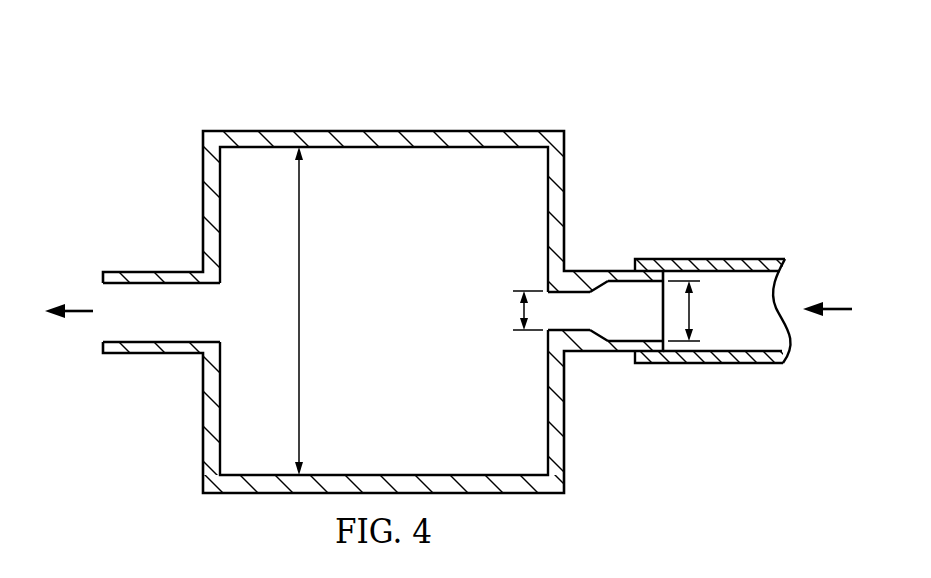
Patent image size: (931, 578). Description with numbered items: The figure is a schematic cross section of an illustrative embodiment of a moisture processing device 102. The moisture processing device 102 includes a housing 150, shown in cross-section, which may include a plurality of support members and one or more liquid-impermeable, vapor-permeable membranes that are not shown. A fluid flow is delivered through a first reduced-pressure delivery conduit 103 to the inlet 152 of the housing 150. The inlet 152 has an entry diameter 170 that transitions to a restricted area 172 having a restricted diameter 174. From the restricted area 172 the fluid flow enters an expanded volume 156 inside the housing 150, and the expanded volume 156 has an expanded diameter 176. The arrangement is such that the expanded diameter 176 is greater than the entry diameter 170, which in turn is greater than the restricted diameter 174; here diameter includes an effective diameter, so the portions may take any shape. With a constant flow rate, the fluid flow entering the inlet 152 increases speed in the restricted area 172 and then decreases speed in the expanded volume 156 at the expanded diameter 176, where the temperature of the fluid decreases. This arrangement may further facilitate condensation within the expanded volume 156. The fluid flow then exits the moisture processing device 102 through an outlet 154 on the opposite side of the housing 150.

The moisture processing device 102 is at (423, 126).
The housing 150 is at (523, 130).
The expanded volume 156 is at (403, 326).
The outlet 154 is at (135, 272).
The inlet 152 is at (594, 271).
The restricted area 172 is at (570, 294).
The first reduced-pressure delivery conduit 103 is at (752, 259).
The entry diameter 170 is at (690, 309).
The restricted diameter 174 is at (517, 312).
The expanded diameter 176 is at (297, 313).